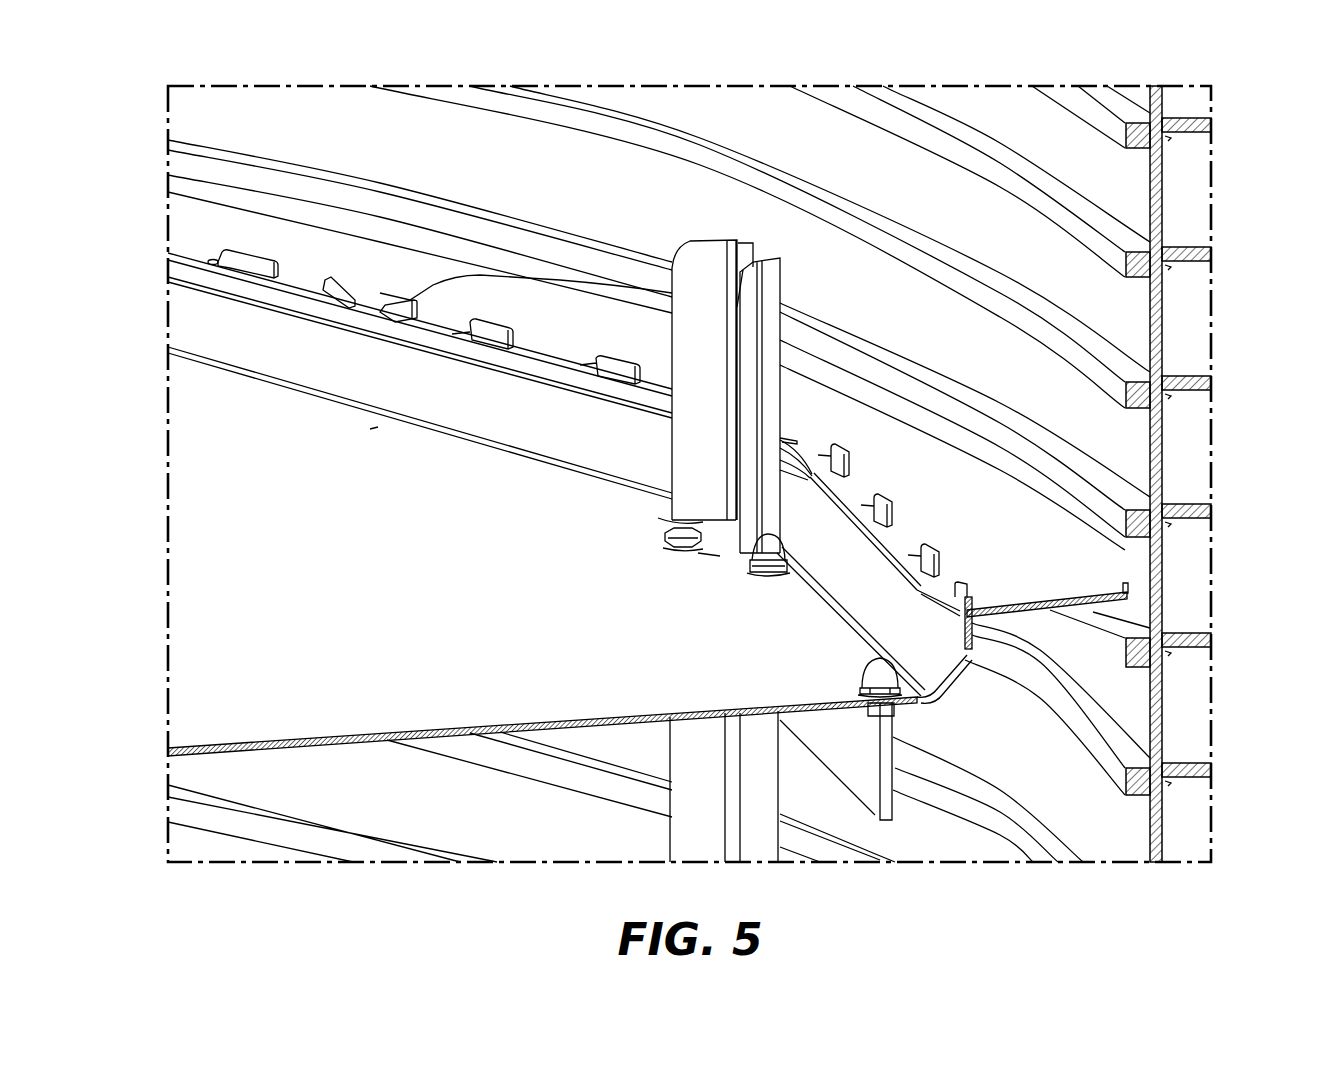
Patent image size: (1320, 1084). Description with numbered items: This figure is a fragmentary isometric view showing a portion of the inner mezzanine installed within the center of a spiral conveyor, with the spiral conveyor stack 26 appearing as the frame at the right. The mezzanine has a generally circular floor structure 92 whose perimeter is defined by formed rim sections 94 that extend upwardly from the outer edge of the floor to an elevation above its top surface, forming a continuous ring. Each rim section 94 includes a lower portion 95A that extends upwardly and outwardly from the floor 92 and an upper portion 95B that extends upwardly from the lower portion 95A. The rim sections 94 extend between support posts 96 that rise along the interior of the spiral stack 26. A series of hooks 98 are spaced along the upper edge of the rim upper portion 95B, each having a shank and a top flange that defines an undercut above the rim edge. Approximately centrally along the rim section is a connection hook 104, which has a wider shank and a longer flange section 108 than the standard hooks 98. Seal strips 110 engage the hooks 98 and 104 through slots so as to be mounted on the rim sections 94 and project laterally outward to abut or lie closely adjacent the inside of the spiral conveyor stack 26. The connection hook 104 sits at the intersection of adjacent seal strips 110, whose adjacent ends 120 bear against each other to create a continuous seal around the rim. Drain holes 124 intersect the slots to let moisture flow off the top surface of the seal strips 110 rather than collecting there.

The spiral conveyor stack 26 is at (1213, 178).
The floor structure 92 is at (397, 645).
The rim section 94 is at (1033, 700).
The lower portion 95A is at (933, 653).
The upper portion 95B is at (1033, 645).
The support post 96 is at (708, 280).
The hook 98 is at (257, 265).
The connection hook 104 is at (347, 303).
The flange section 108 is at (370, 297).
The seal strip 110 is at (203, 220).
The adjacent end 120 is at (433, 287).
The drain hole 124 is at (213, 262).